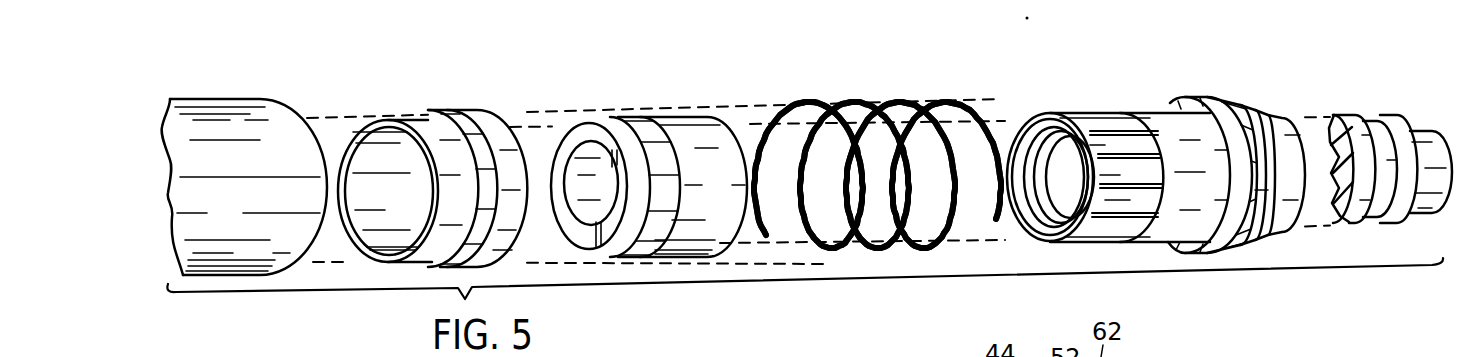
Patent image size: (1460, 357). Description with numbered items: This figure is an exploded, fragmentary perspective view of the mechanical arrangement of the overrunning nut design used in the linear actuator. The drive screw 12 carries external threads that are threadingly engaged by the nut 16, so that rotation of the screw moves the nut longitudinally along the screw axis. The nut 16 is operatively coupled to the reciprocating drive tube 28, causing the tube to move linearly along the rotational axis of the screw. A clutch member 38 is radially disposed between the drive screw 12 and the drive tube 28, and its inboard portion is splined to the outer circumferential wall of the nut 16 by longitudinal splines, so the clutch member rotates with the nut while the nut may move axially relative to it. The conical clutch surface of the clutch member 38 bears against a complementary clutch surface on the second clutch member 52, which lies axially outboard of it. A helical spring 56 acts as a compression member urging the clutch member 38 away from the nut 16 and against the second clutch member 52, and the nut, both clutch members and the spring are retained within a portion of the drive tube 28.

The drive tube 28 is at (160, 148).
The second clutch member 52 is at (382, 122).
The clutch member 38 is at (591, 132).
The helical spring 56 is at (976, 113).
The nut 16 is at (1162, 128).
The drive screw 12 is at (1326, 129).